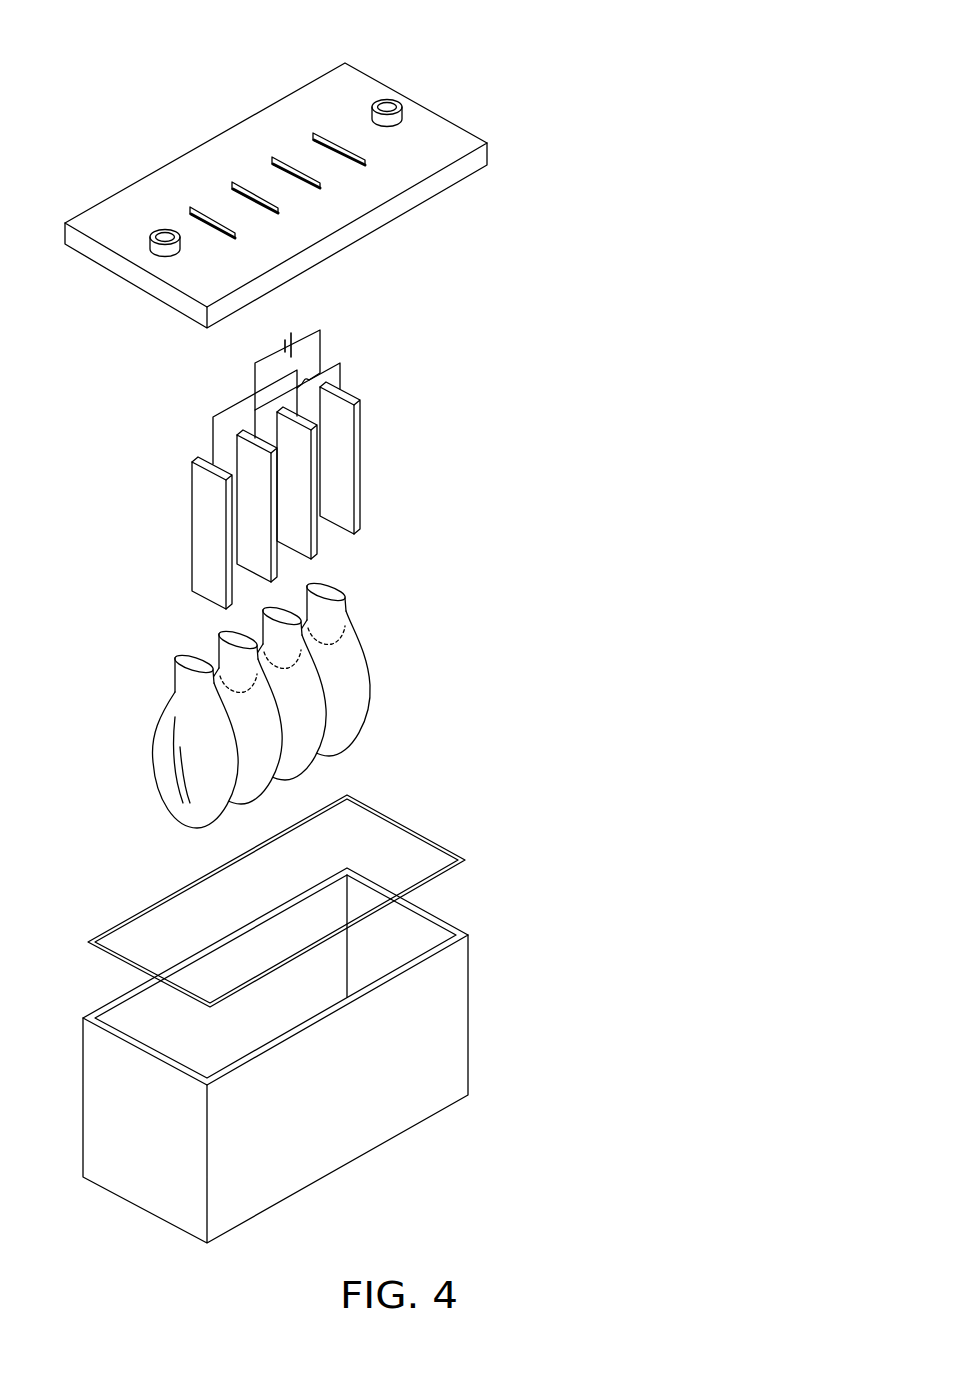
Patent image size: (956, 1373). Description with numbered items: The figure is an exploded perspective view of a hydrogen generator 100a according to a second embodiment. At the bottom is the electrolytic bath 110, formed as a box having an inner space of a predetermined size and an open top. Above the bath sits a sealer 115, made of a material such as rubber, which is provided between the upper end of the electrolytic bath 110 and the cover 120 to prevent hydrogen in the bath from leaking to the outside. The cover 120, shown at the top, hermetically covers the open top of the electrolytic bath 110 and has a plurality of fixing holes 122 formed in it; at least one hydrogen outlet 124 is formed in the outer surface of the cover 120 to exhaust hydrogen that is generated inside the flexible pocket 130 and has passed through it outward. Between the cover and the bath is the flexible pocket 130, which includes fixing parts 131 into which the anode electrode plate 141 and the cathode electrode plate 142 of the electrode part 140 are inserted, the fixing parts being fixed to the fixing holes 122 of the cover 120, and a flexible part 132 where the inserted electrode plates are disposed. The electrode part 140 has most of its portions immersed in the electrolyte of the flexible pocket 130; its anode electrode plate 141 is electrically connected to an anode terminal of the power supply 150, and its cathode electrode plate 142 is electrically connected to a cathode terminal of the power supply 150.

The hydrogen generator 100a is at (632, 80).
The electrolytic bath 110 is at (453, 1020).
The sealer 115 is at (407, 818).
The cover 120 is at (403, 170).
The fixing holes 122 is at (280, 160).
The hydrogen outlet 124 is at (400, 113).
The flexible pocket 130 is at (556, 628).
The fixing parts 131 is at (290, 628).
The flexible part 132 is at (308, 728).
The electrode part 140 is at (500, 420).
The anode electrode plate 141 is at (278, 540).
The cathode electrode plate 142 is at (305, 483).
The power supply 150 is at (327, 316).